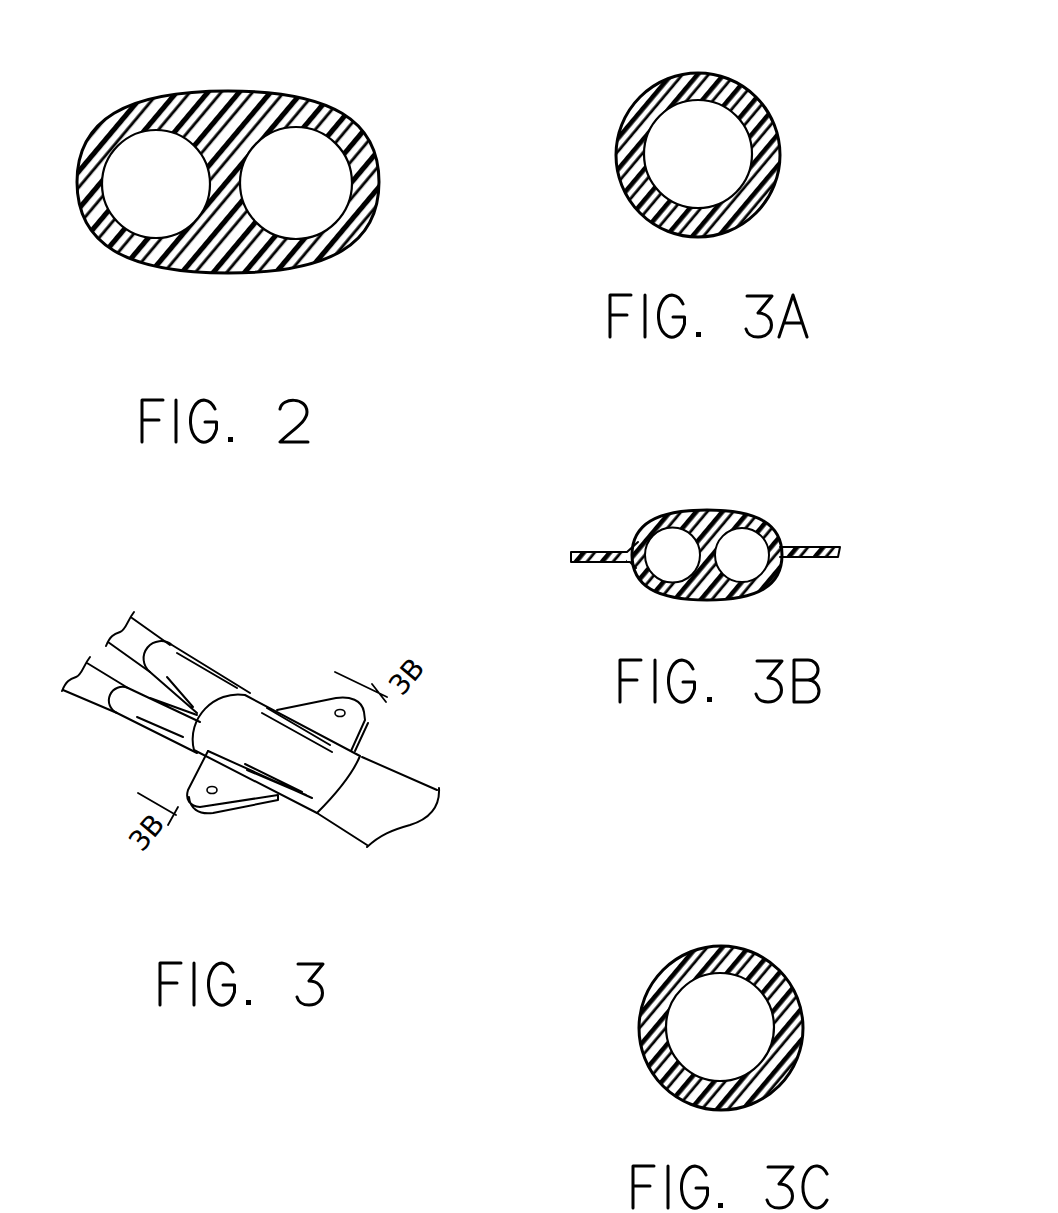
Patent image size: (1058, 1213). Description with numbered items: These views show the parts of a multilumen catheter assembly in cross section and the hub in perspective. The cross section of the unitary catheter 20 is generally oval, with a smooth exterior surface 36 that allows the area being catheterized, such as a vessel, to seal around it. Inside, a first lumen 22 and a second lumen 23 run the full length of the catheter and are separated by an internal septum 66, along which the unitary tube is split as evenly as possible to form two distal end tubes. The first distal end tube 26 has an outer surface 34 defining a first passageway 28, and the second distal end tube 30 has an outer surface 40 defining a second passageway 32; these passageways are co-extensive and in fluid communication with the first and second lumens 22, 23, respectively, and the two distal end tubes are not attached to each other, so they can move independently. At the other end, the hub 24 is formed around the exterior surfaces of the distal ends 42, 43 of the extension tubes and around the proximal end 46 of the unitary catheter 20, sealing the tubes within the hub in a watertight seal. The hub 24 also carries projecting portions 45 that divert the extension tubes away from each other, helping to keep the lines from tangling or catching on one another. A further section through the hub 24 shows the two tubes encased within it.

In FIG. 2, the unitary catheter 20 is at (225, 92).
In FIG. 2, the first lumen 22 is at (150, 167).
In FIG. 2, the second lumen 23 is at (318, 162).
In FIG. 2, the exterior surface 36 is at (263, 273).
In FIG. 2, the internal septum 66 is at (227, 200).
In FIG. 3A, the second distal end tube 30 is at (622, 73).
In FIG. 3A, the outer surface 40 is at (730, 80).
In FIG. 3A, the second passageway 32 is at (713, 135).
In FIG. 3C, the first distal end tube 26 is at (653, 938).
In FIG. 3C, the outer surface 34 is at (760, 962).
In FIG. 3C, the first passageway 28 is at (748, 1020).
In FIG. 3, the hub 24 is at (337, 762).
In FIG. 3, the distal end of extension tube 42 is at (117, 712).
In FIG. 3, the distal end of extension tube 43 is at (168, 652).
In FIG. 3, the projecting portions 45 is at (202, 680).
In FIG. 3, the proximal end 46 is at (322, 820).